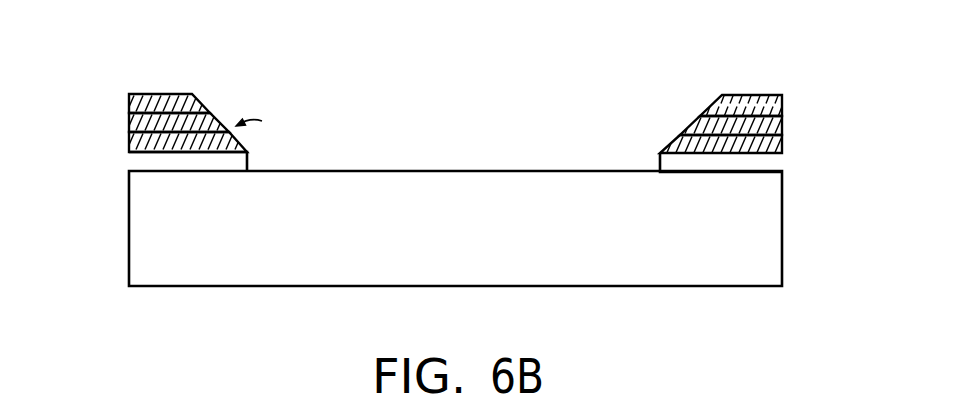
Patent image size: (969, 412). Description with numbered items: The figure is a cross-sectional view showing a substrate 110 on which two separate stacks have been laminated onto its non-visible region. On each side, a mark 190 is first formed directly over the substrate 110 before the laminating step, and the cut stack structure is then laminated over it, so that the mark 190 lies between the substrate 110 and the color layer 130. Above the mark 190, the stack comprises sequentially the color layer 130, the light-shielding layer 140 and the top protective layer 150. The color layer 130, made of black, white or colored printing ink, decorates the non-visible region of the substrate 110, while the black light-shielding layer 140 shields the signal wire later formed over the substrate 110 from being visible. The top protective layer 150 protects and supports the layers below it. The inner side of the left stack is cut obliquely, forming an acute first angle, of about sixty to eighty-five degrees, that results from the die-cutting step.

The substrate 110 is at (770, 232).
The mark 190 is at (127, 163).
The color layer 130 is at (127, 145).
The light-shielding layer 140 is at (127, 122).
The top protective layer 150 is at (127, 103).